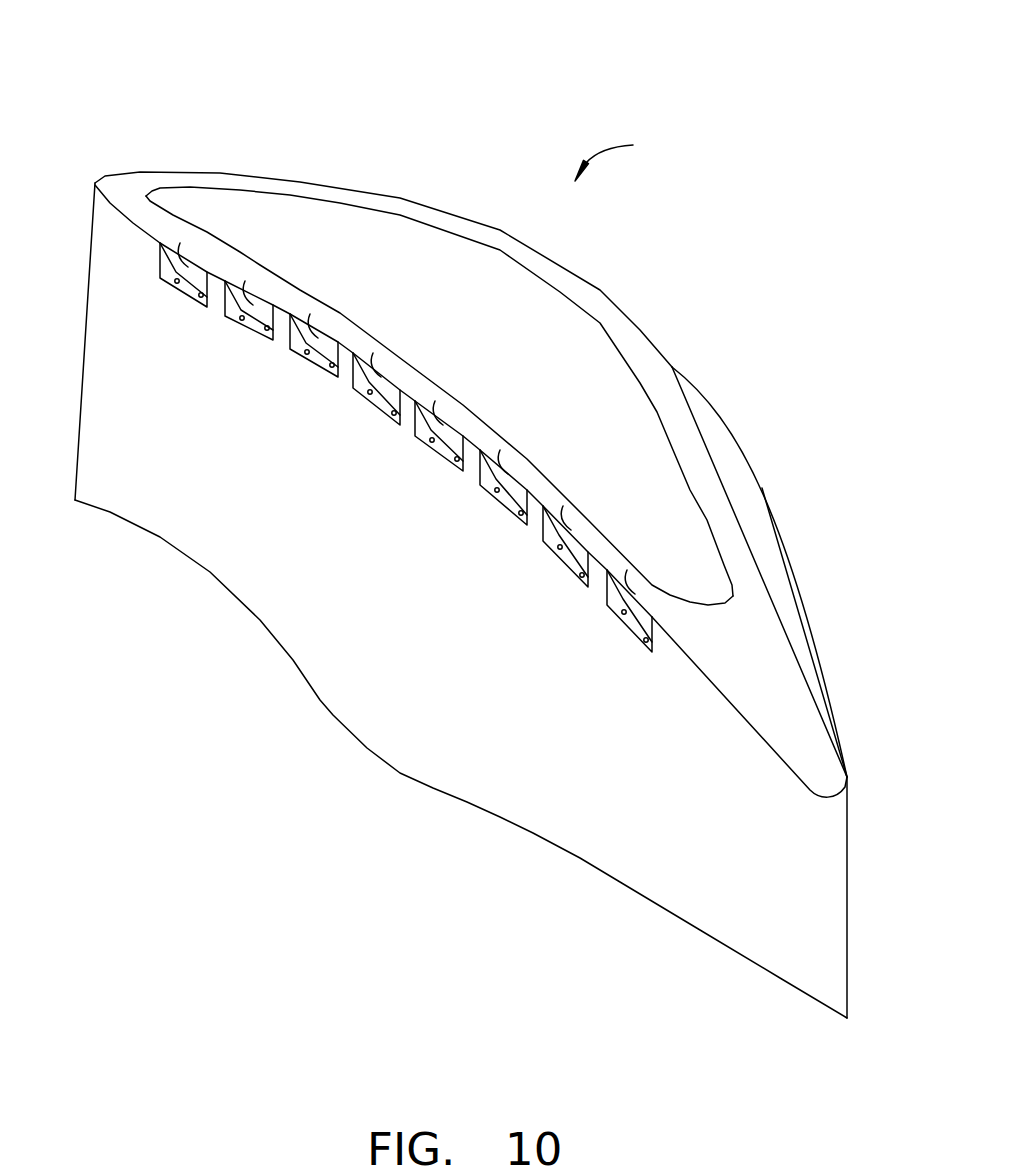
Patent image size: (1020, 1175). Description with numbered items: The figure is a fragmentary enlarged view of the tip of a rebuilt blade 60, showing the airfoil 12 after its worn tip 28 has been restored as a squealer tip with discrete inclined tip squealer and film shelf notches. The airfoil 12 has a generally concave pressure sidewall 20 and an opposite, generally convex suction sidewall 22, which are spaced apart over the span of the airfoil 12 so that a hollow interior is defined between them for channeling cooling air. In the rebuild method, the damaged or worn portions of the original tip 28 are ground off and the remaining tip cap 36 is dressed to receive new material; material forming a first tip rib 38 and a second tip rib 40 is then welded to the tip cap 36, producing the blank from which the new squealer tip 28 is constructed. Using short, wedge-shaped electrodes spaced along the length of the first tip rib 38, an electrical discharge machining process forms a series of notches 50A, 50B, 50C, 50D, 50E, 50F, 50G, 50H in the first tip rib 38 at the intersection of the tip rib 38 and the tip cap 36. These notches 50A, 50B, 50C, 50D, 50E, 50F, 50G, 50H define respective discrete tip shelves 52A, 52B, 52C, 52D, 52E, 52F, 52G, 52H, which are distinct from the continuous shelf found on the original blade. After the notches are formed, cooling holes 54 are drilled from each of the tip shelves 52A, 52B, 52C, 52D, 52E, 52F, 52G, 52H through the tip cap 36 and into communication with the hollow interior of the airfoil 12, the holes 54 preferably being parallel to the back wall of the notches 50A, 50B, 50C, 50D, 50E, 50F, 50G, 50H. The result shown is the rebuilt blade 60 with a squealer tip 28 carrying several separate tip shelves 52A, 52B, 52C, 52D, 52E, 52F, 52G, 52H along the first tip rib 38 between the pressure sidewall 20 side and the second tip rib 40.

The airfoil 12 is at (404, 86).
The pressure sidewall 20 is at (408, 588).
The suction sidewall 22 is at (847, 820).
The blade tip 28 is at (753, 592).
The tip cap 36 is at (547, 322).
The first tip rib 38 is at (130, 205).
The second tip rib 40 is at (613, 323).
The notch 50A is at (623, 580).
The notch 50B is at (570, 530).
The notch 50C is at (507, 473).
The notch 50D is at (443, 423).
The notch 50E is at (378, 380).
The notch 50F is at (318, 339).
The notch 50G is at (254, 297).
The notch 50H is at (183, 259).
The tip shelf 52A is at (652, 619).
The tip shelf 52B is at (580, 548).
The tip shelf 52C is at (500, 497).
The tip shelf 52D is at (440, 452).
The tip shelf 52E is at (371, 410).
The tip shelf 52F is at (310, 368).
The tip shelf 52G is at (238, 327).
The tip shelf 52H is at (183, 292).
The cooling holes 54 is at (644, 639).
The rebuilt blade 60 is at (622, 155).